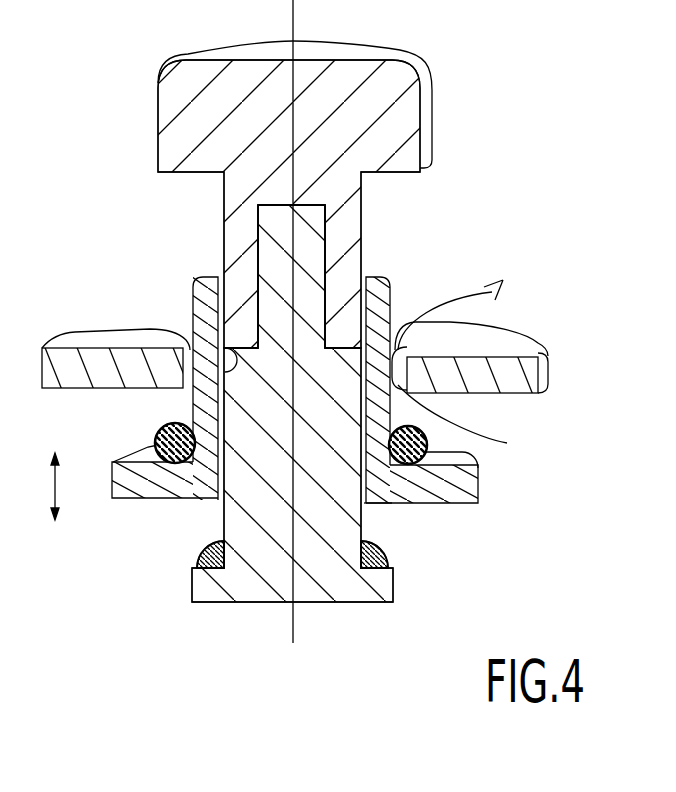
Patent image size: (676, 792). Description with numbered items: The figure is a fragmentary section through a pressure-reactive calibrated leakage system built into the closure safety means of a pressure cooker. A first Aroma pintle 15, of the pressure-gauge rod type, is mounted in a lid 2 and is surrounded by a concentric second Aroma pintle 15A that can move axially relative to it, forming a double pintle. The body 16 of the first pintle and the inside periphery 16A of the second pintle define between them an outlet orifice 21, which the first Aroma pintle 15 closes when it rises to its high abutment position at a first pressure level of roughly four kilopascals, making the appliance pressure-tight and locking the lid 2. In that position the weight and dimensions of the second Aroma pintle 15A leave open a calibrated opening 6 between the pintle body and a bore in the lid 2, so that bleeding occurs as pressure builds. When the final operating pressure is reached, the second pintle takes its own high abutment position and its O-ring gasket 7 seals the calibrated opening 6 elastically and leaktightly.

The first Aroma pintle 15 is at (445, 75).
The body 16 is at (345, 240).
The inside periphery of the second Aroma pintle 16A is at (193, 322).
The calibrated opening 6 is at (190, 356).
The lid 2 is at (507, 343).
The O-ring gasket 7 is at (168, 462).
The second Aroma pintle 15A is at (486, 497).
The outlet orifice 21 is at (367, 503).